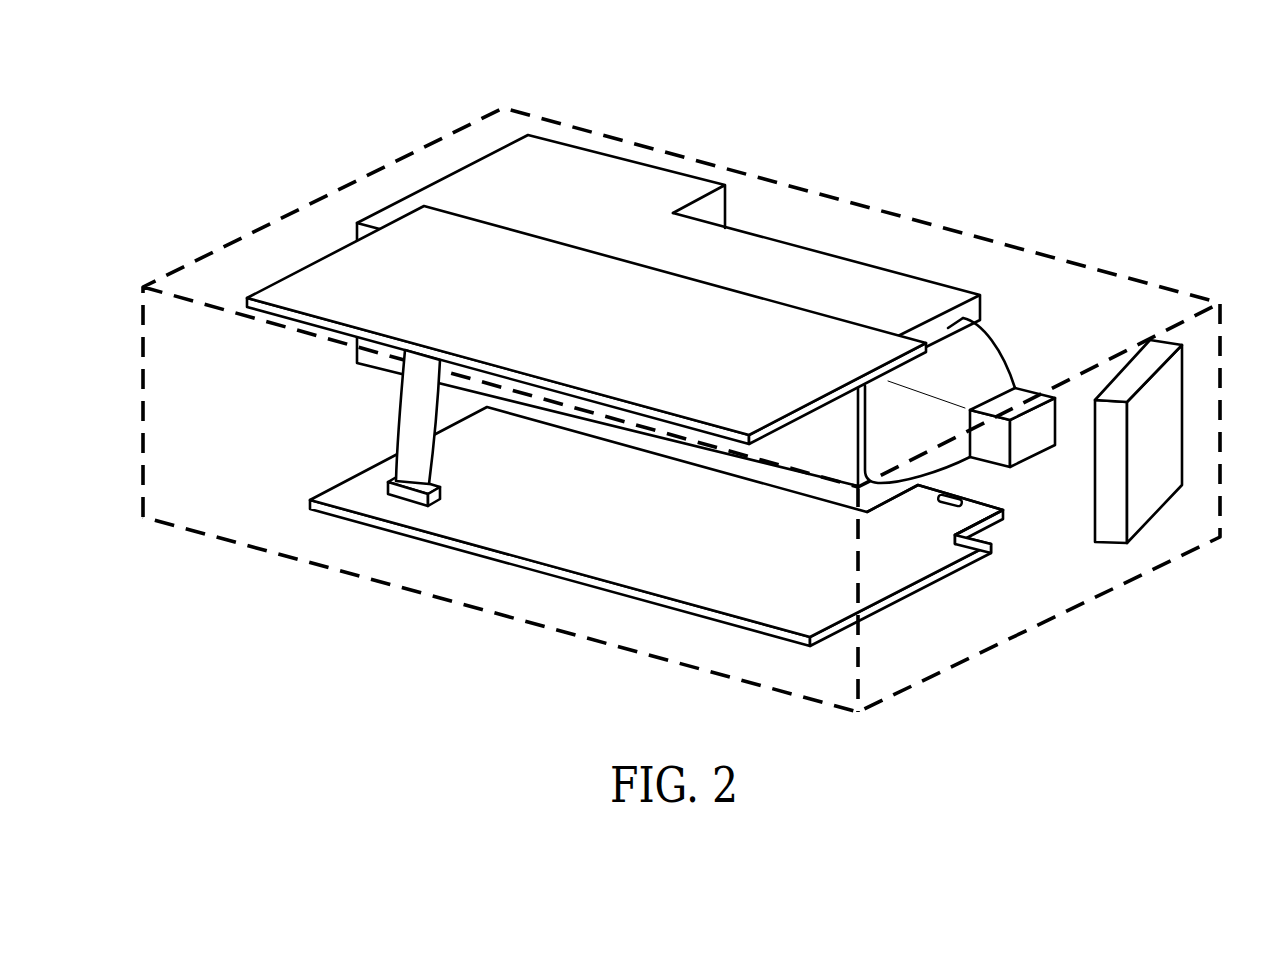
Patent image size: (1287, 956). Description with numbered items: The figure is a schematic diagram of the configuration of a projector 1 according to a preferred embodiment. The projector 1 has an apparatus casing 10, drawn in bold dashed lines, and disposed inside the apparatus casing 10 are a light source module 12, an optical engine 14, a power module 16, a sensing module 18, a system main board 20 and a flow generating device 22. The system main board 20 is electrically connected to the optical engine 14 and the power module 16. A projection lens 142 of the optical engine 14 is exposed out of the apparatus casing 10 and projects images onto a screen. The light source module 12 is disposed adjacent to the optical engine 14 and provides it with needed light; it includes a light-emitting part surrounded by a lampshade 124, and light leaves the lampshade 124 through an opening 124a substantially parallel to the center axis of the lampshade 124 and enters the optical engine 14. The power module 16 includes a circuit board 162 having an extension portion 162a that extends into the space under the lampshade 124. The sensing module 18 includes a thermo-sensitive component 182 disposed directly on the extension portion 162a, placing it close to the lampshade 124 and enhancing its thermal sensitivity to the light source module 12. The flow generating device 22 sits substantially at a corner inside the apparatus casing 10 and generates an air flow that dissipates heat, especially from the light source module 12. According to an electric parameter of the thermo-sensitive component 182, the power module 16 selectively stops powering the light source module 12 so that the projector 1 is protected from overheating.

The projector 1 is at (1112, 127).
The apparatus casing 10 is at (1170, 288).
The light source module 12 is at (1013, 333).
The lampshade 124 is at (993, 370).
The opening 124a is at (948, 323).
The optical engine 14 is at (760, 223).
The projection lens 142 is at (587, 157).
The power module 16 is at (685, 531).
The circuit board 162 is at (515, 540).
The extension portion 162a is at (972, 518).
The sensing module 18 is at (739, 428).
The thermo-sensitive component 182 is at (957, 495).
The system main board 20 is at (307, 283).
The flow generating device 22 is at (1168, 427).